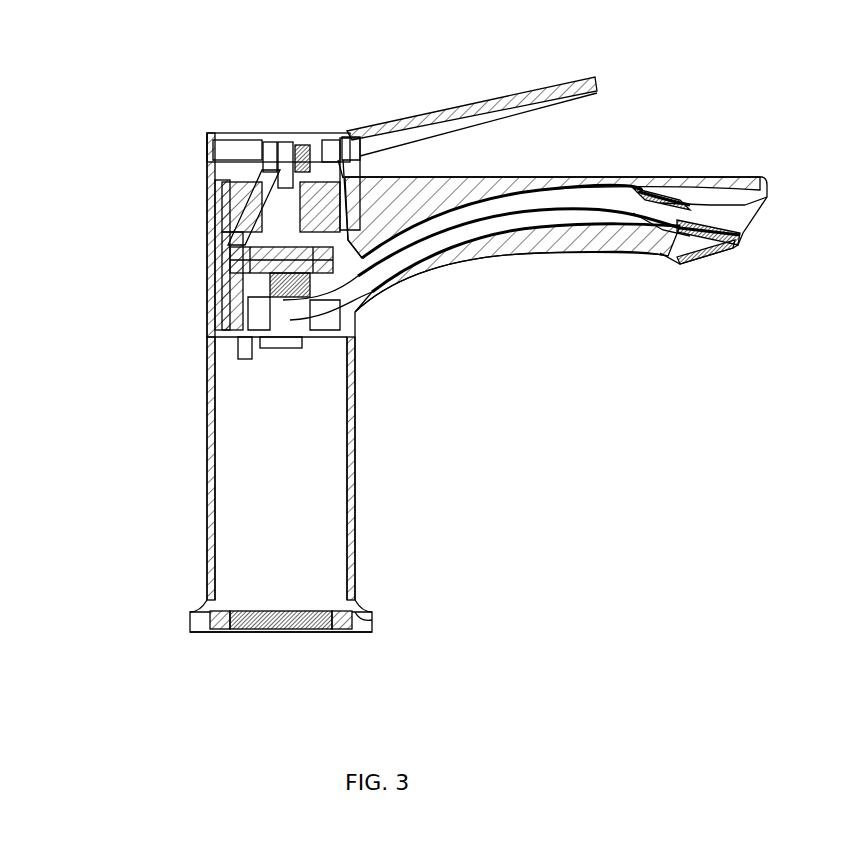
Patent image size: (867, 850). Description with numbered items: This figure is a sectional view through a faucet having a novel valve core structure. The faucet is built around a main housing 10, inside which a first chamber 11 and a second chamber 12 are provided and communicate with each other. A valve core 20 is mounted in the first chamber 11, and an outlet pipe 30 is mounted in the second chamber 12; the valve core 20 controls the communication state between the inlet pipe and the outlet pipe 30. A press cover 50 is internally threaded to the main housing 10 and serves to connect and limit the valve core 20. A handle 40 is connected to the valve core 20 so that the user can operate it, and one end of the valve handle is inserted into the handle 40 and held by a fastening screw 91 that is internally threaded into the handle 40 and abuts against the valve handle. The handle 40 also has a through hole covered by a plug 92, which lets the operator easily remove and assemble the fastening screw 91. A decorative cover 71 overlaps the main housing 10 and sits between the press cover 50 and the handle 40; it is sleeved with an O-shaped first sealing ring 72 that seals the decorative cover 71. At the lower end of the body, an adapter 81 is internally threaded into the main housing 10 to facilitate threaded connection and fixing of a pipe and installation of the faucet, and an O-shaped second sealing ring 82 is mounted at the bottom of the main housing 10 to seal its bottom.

The main housing 10 is at (208, 476).
The first chamber 11 is at (348, 232).
The second chamber 12 is at (528, 222).
The valve core 20 is at (215, 235).
The outlet pipe 30 is at (548, 213).
The handle 40 is at (530, 95).
The press cover 50 is at (222, 193).
The decorative cover 71 is at (336, 145).
The first sealing ring 72 is at (318, 140).
The adapter 81 is at (332, 628).
The second sealing ring 82 is at (362, 632).
The fastening screw 91 is at (285, 137).
The plug 92 is at (353, 152).